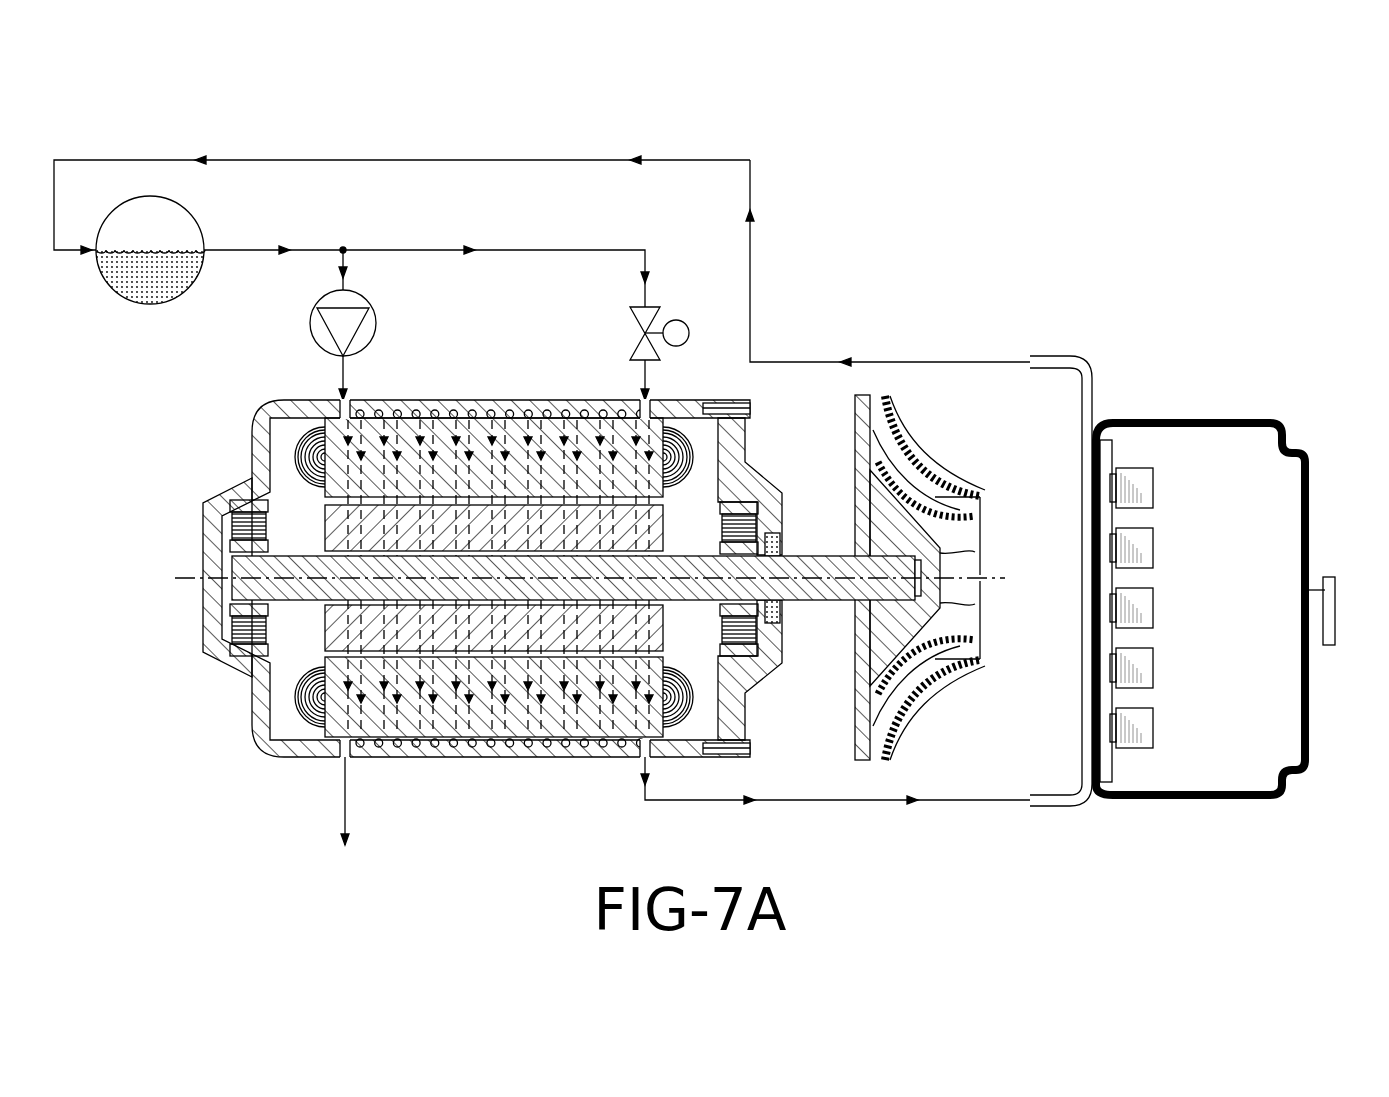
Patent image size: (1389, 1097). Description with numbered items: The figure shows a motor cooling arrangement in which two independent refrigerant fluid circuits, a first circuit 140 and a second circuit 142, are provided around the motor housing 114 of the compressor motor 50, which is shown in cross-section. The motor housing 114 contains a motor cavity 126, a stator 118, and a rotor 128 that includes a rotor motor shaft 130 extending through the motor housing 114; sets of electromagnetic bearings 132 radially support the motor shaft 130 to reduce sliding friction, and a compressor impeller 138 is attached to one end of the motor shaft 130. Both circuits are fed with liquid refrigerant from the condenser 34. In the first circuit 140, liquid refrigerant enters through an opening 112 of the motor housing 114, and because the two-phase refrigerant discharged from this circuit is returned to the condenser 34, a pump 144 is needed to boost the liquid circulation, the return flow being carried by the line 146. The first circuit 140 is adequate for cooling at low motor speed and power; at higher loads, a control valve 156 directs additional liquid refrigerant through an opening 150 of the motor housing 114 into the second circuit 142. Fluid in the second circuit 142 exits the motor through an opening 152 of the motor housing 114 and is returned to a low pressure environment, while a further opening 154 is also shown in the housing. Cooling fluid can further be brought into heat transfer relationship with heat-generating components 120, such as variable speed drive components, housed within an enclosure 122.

The first circuit 140 is at (325, 150).
The line 146 is at (243, 160).
The condenser 34 is at (134, 243).
The pump 144 is at (368, 302).
The control valve 156 is at (632, 322).
The opening 112 is at (340, 408).
The stator 118 is at (318, 435).
The opening 150 is at (655, 402).
The rotor 128 is at (322, 525).
The electromagnetic bearings 132 is at (235, 505).
The compressor motor 50 is at (205, 548).
The rotor motor shaft 130 is at (820, 552).
The motor cavity 126 is at (282, 700).
The motor housing 114 is at (248, 713).
The compressor impeller 138 is at (928, 668).
The opening 152 is at (338, 762).
The fluid outlet port 154 is at (640, 762).
The second circuit 142 is at (305, 820).
The heat-generating components 120 is at (1155, 547).
The enclosure 122 is at (1312, 545).